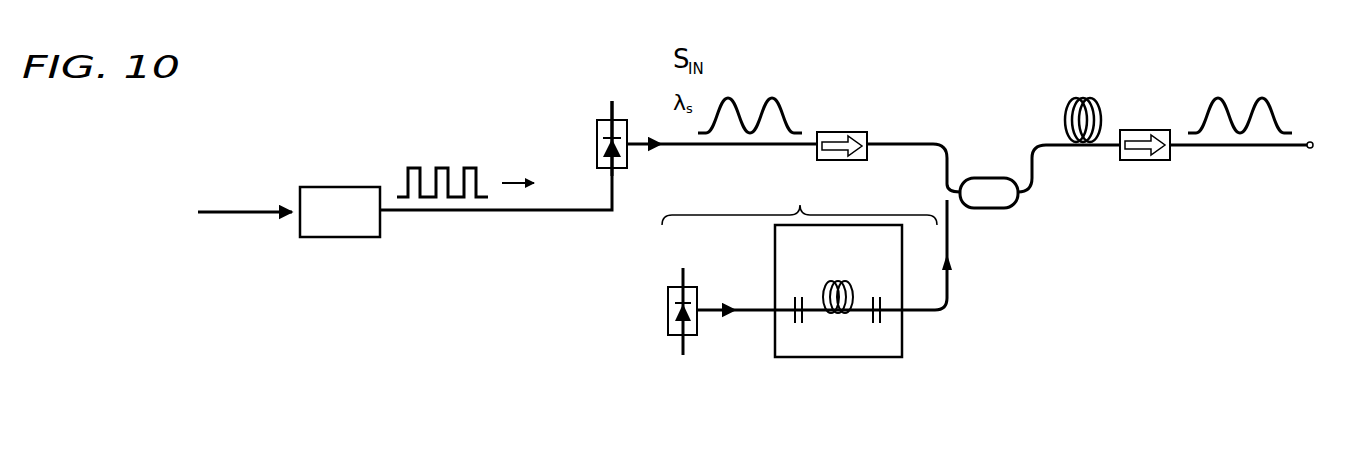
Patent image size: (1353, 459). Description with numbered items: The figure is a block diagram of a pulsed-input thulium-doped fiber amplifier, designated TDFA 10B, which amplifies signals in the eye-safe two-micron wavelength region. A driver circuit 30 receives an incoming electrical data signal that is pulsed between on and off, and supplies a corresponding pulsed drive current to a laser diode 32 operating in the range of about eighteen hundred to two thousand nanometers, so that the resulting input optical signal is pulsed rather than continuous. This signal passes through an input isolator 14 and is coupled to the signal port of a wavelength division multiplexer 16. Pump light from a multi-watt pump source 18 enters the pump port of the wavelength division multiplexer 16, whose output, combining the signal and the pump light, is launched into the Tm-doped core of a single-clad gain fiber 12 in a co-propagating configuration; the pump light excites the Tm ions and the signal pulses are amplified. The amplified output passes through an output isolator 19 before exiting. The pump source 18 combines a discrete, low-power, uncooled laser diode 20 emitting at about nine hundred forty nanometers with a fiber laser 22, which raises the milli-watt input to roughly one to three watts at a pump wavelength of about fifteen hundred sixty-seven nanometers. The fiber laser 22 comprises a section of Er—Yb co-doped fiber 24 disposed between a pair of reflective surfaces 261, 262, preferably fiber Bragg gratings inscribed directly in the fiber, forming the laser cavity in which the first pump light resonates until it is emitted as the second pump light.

The pulsed input TDFA 10B is at (152, 149).
The driver circuit 30 is at (339, 187).
The laser diode 32 is at (597, 141).
The input isolator 14 is at (841, 132).
The wavelength division multiplexer 16 is at (990, 178).
The single-clad gain fiber 12 is at (1080, 98).
The output isolator 19 is at (1145, 130).
The pump source 18 is at (808, 196).
The laser diode 20 is at (668, 307).
The fiber laser 22 is at (838, 357).
The Er—Yb co-doped fiber 24 is at (836, 280).
The reflective surface 261 is at (798, 296).
The reflective surface 262 is at (876, 296).